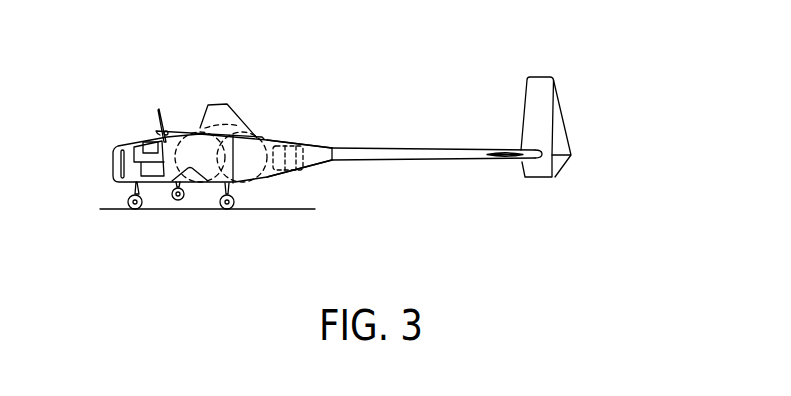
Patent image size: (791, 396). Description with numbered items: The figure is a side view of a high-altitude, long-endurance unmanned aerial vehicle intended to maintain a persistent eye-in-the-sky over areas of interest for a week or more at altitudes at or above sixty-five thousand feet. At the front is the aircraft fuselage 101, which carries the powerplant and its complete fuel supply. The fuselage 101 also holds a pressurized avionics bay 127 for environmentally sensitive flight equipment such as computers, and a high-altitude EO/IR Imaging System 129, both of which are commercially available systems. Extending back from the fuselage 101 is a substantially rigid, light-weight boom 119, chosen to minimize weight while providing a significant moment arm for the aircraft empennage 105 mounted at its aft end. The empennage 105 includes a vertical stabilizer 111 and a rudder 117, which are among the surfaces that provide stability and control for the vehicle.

The aircraft fuselage 101 is at (267, 178).
The aircraft empennage 105 is at (470, 158).
The vertical stabilizer 111 is at (530, 101).
The rudder 117 is at (558, 127).
The boom 119 is at (418, 150).
The pressurized avionics bay 127 is at (285, 138).
The high-altitude EO/IR Imaging System 129 is at (181, 207).